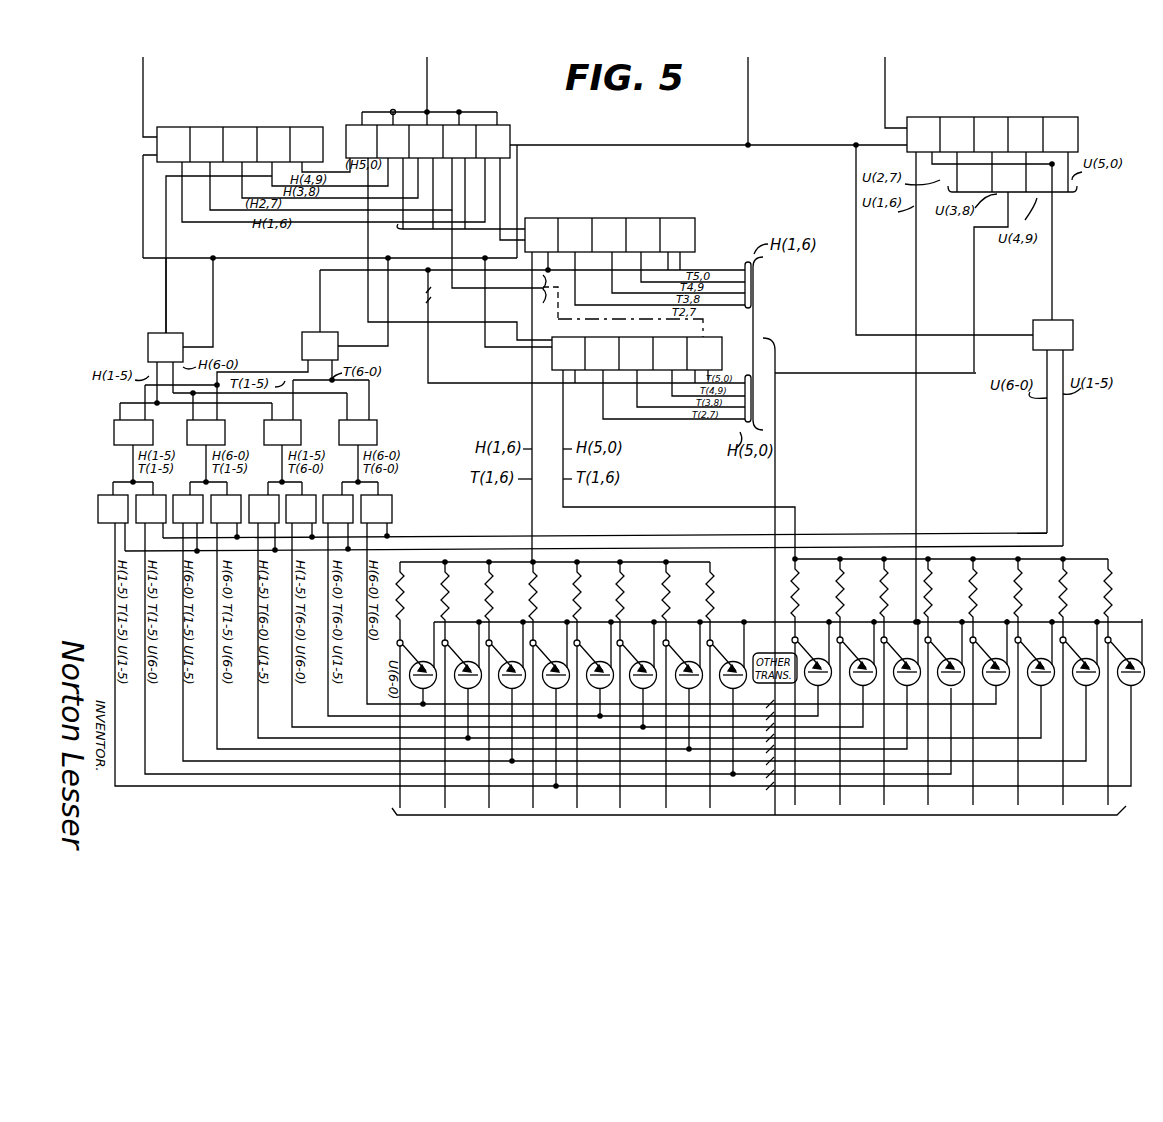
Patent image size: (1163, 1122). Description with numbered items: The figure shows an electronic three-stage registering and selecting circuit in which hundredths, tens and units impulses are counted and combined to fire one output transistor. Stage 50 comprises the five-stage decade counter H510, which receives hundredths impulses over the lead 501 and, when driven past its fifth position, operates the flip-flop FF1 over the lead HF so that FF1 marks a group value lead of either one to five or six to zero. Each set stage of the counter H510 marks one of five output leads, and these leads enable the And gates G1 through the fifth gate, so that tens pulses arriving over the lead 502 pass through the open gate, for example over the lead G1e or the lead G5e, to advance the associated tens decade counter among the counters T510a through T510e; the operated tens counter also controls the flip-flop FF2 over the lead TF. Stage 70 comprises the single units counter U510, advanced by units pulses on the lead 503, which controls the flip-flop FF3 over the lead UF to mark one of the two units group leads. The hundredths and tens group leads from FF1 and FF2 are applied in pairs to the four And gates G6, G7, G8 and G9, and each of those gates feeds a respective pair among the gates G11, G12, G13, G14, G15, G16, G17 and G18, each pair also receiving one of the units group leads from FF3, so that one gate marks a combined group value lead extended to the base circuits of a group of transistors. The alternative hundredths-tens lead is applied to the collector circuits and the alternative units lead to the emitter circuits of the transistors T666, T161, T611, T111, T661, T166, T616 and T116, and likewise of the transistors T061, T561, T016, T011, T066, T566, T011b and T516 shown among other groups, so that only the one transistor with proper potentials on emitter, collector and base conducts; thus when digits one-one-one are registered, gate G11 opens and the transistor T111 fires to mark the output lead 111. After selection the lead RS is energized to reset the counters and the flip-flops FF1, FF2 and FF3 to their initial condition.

The lead 501 is at (143, 84).
The lead 502 is at (427, 68).
The lead 503 is at (885, 72).
The stage 50 is at (240, 126).
The stage 70 is at (1015, 117).
The output lead 111 is at (759, 803).
The decade counter H510 is at (223, 124).
The units counter U510 is at (1078, 133).
The tens decade counter T510a is at (523, 238).
The tens decade counter T510e is at (538, 370).
The flip-flop FF1 is at (165, 347).
The flip-flop FF2 is at (320, 346).
The flip-flop FF3 is at (1053, 335).
The And gate G1 is at (428, 141).
The And gate G6 is at (133, 432).
The And gate G7 is at (206, 432).
The And gate G8 is at (282, 432).
The And gate G9 is at (358, 432).
The And gate G11 is at (113, 509).
The And gate G12 is at (151, 509).
The And gate G13 is at (188, 509).
The And gate G14 is at (226, 509).
The And gate G15 is at (264, 509).
The And gate G16 is at (301, 509).
The And gate G17 is at (338, 509).
The And gate G18 is at (376, 509).
The lead G1e is at (510, 195).
The lead G5e is at (480, 322).
The lead HF is at (166, 320).
The lead TF is at (320, 324).
The lead UF is at (1058, 238).
The lead RS is at (748, 66).
The transistor T666 is at (416, 685).
The transistor T161 is at (461, 685).
The transistor T611 is at (505, 685).
The transistor T111 is at (549, 685).
The transistor T661 is at (593, 685).
The transistor T166 is at (636, 685).
The transistor T616 is at (682, 685).
The transistor T116 is at (726, 685).
The transistor T061 is at (811, 682).
The transistor T561 is at (858, 682).
The transistor T016 is at (911, 682).
The transistor T011 is at (947, 682).
The transistor T066 is at (992, 682).
The transistor T566 is at (1036, 682).
The transistor T011 (second) T011b is at (1081, 682).
The transistor T516 is at (1127, 682).